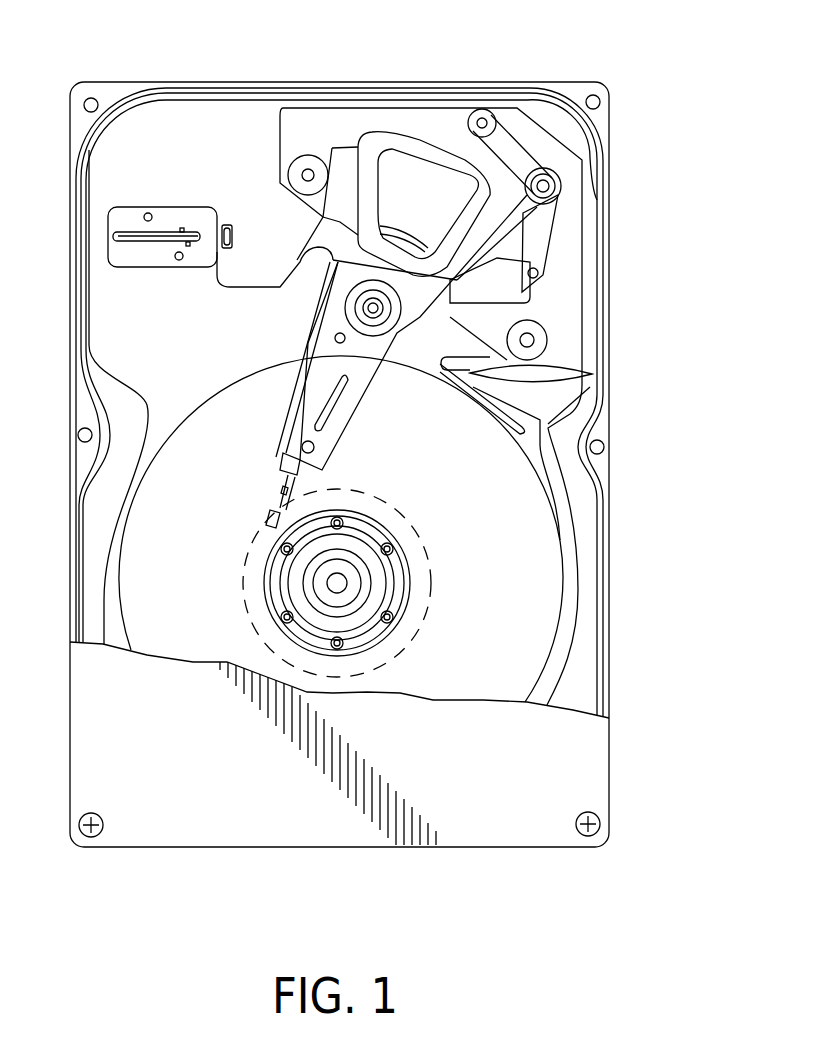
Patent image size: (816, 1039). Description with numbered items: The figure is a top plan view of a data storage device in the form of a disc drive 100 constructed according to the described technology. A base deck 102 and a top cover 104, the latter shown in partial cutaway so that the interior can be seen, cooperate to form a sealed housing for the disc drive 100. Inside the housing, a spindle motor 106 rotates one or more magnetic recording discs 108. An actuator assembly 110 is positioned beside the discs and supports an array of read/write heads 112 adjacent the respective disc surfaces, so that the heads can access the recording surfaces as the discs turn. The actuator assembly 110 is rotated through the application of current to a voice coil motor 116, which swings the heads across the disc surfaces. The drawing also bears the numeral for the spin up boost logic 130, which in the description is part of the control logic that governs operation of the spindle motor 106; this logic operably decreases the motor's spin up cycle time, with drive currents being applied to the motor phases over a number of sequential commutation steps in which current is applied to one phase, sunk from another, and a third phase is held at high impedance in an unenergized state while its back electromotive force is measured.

The disc drive 100 is at (228, 57).
The base deck 102 is at (168, 120).
The top cover 104 is at (597, 775).
The spindle motor 106 is at (392, 566).
The magnetic recording discs 108 is at (540, 558).
The actuator assembly 110 is at (357, 410).
The read/write heads 112 is at (270, 518).
The voice coil motor (VCM) 116 is at (401, 123).
The spin up boost logic 130 is at (215, 277).